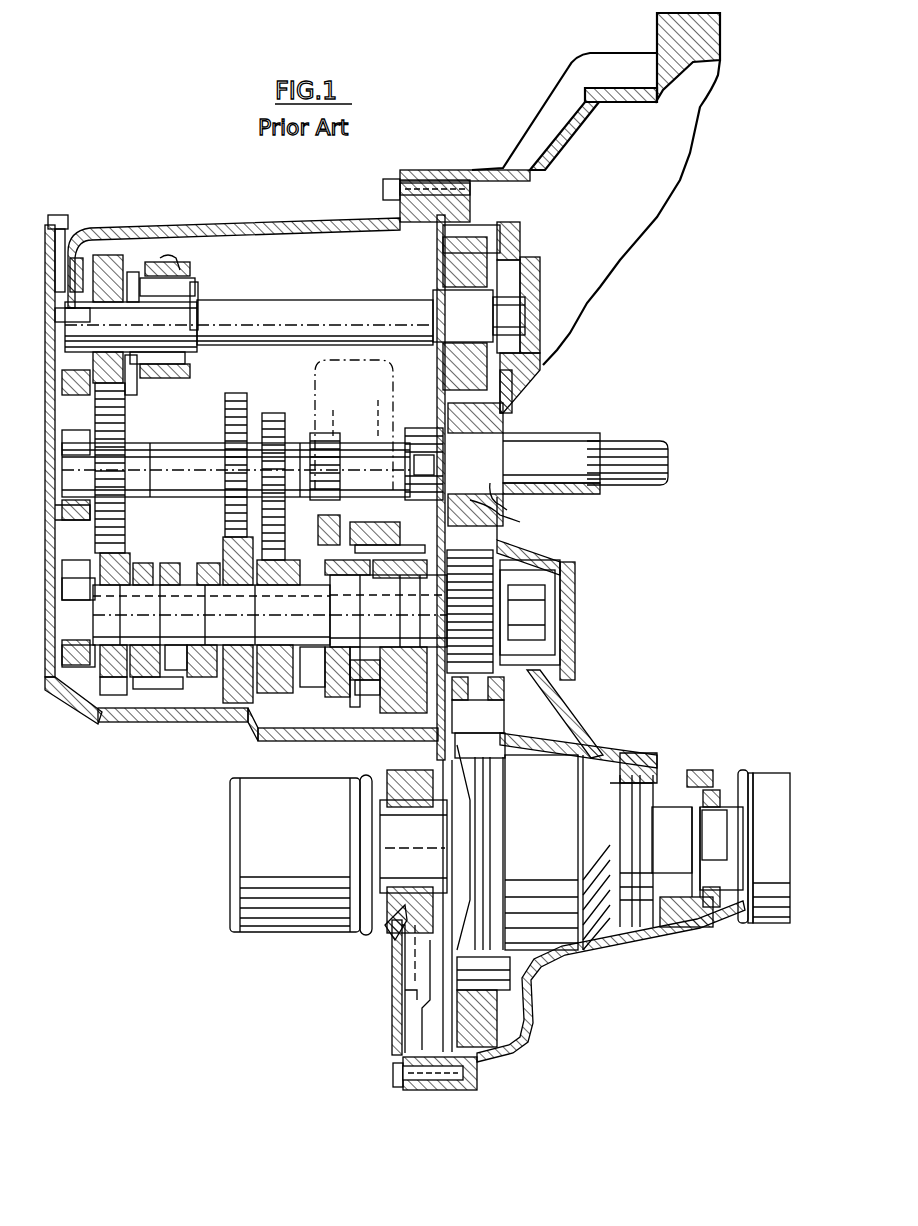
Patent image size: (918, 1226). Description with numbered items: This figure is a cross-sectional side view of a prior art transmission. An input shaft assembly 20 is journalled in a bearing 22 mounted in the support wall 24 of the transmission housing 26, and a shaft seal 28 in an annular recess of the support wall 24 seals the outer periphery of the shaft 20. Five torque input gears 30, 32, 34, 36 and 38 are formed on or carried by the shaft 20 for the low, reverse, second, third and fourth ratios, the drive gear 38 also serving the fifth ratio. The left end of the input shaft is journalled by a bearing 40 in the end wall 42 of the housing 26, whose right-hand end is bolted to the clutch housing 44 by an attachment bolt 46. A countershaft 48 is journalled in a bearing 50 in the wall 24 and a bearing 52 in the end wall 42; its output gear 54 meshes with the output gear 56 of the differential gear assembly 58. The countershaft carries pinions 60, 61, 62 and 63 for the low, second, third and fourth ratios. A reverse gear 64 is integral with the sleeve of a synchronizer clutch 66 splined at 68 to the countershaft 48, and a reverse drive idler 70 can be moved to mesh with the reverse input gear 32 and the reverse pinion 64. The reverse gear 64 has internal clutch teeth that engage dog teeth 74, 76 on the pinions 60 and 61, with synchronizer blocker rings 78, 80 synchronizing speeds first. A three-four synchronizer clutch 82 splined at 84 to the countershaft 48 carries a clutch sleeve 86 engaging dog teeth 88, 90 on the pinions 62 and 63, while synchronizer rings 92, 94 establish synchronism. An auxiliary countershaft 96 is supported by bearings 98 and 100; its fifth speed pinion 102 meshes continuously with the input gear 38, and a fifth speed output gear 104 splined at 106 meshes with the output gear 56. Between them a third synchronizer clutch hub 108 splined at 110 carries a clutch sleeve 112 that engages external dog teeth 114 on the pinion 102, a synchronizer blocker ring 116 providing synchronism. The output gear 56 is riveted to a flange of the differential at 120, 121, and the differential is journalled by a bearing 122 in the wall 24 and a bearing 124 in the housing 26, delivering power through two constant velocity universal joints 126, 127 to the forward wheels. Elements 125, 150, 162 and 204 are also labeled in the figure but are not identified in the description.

The input shaft assembly 20 is at (645, 443).
The bearing 22 is at (492, 498).
The support wall 24 is at (472, 528).
The transmission housing 26 is at (318, 222).
The shaft seal 28 is at (512, 438).
The low speed ratio torque input gear 30 is at (415, 430).
The reverse input gear 32 is at (340, 490).
The second speed ratio torque input gear 34 is at (285, 425).
The third speed ratio torque input gear 36 is at (225, 424).
The drive gear 38 is at (125, 424).
The bearing 40 is at (50, 468).
The end wall 42 is at (55, 518).
The clutch housing 44 is at (530, 135).
The attachment bolt 46 is at (385, 188).
The countershaft 48 is at (68, 700).
The bearing 50 is at (562, 579).
The bearing 52 is at (70, 618).
The output gear 54 is at (482, 544).
The output gear 56 is at (530, 688).
The differential gear assembly 58 is at (378, 983).
The low speed ratio pinion 60 is at (440, 775).
The second speed ratio pinion 61 is at (272, 700).
The third speed ratio pinion 62 is at (230, 735).
The fourth speed ratio pinion 63 is at (116, 696).
The reverse gear 64 is at (314, 540).
The synchronizer clutch 66 is at (335, 700).
The spline 68 is at (386, 611).
The reverse drive idler 70 is at (360, 361).
The dog teeth 74 is at (395, 700).
The dog teeth 76 is at (305, 705).
The synchronizer blocker ring 78 is at (365, 690).
The synchronizer blocker ring 80 is at (345, 710).
The three-four synchronizer clutch 82 is at (172, 700).
The spline 84 is at (211, 615).
The clutch sleeve 86 is at (165, 690).
The dog teeth 88 is at (205, 698).
The dog teeth 90 is at (143, 563).
The synchronizer ring 92 is at (185, 563).
The synchronizer ring 94 is at (152, 560).
The auxiliary countershaft 96 is at (318, 300).
The bearing 98 is at (530, 268).
The bearing 100 is at (76, 232).
The fifth speed ratio pinion 102 is at (106, 255).
The fifth speed output gear 104 is at (482, 250).
The spline 106 is at (445, 275).
The third synchronizer clutch hub 108 is at (192, 364).
The spline 110 is at (196, 298).
The clutch sleeve 112 is at (185, 262).
The external dog teeth 114 is at (138, 272).
The synchronizer blocker ring 116 is at (140, 380).
The differential flange rivet connection 120 is at (504, 725).
The differential flange rivet connection 121 is at (505, 995).
The bearing 122 is at (688, 785).
The bearing 124 is at (390, 790).
The shaft 125 is at (540, 851).
The constant velocity universal joint 126 is at (765, 773).
The constant velocity universal joint 127 is at (290, 932).
The hub 150 is at (362, 545).
The ring 162 is at (178, 563).
The synchronizer ring 204 is at (186, 232).